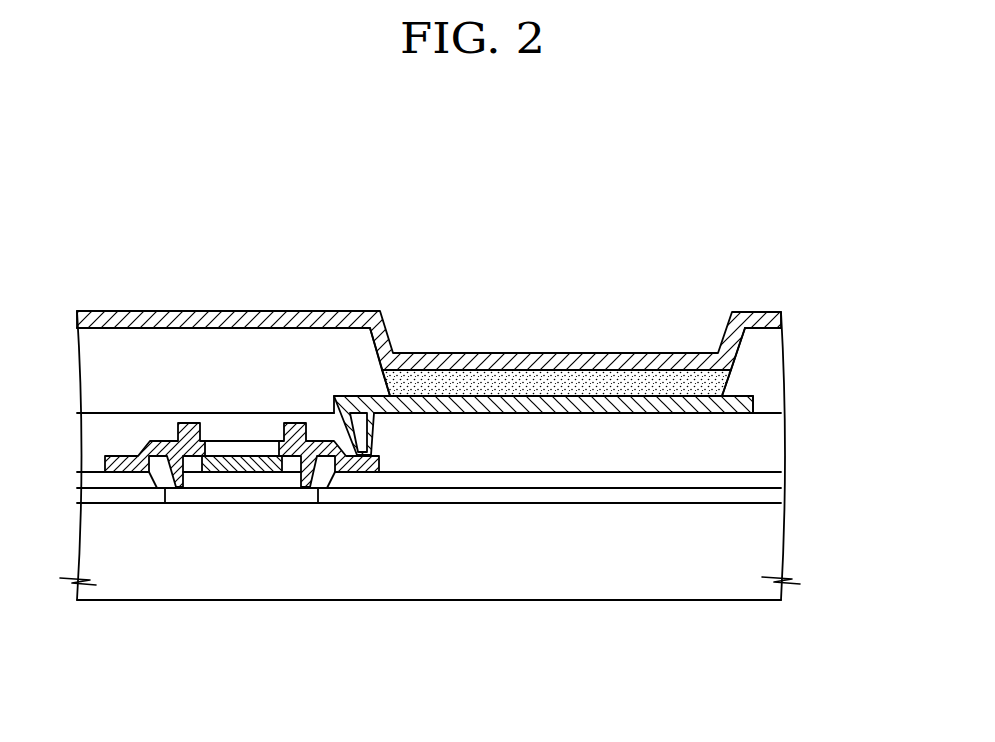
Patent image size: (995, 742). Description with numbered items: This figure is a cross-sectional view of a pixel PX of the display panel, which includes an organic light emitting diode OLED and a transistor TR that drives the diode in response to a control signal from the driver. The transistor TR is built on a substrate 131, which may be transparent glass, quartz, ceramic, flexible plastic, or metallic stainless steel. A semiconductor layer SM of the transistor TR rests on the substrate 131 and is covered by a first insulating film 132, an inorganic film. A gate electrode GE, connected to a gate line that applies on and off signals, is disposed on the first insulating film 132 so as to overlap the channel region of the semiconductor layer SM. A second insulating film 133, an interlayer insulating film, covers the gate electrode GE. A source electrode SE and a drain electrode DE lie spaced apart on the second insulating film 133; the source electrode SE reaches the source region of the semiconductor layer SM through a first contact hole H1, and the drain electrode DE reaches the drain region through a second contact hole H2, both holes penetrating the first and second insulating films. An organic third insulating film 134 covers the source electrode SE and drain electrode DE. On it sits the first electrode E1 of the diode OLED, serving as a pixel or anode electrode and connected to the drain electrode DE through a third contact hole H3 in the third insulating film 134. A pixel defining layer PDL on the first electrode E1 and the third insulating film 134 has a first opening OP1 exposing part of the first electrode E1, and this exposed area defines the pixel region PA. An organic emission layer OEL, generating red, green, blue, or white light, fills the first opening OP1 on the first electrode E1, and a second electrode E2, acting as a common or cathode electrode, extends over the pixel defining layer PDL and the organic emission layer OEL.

The pixel PX is at (724, 160).
The pixel region PA is at (643, 320).
The organic light emitting diode OLED is at (429, 354).
The first electrode E1 is at (443, 405).
The organic emission layer OEL is at (512, 383).
The second electrode E2 is at (450, 290).
The first opening OP1 is at (720, 388).
The pixel defining layer PDL is at (770, 371).
The first contact hole H1 is at (165, 480).
The second contact hole H2 is at (330, 482).
The third contact hole H3 is at (370, 433).
The third insulating film 134 is at (766, 441).
The second insulating film 133 is at (771, 482).
The first insulating film 132 is at (770, 495).
The substrate 131 is at (768, 556).
The transistor TR is at (242, 479).
The source electrode SE is at (127, 473).
The gate electrode GE is at (222, 473).
The semiconductor layer SM is at (262, 493).
The drain electrode DE is at (361, 473).